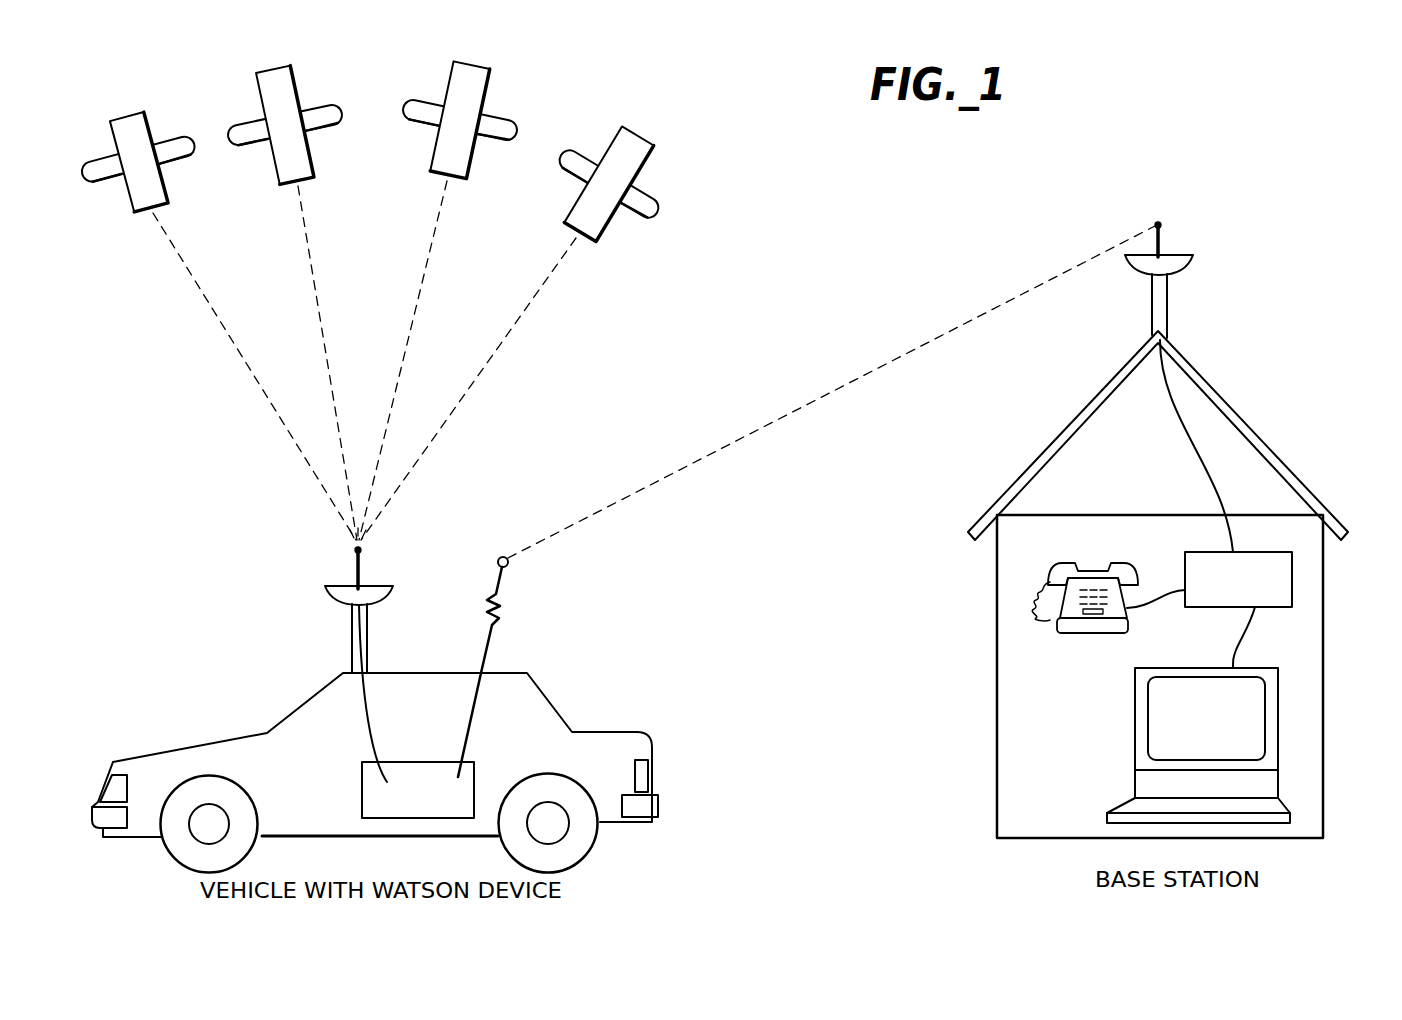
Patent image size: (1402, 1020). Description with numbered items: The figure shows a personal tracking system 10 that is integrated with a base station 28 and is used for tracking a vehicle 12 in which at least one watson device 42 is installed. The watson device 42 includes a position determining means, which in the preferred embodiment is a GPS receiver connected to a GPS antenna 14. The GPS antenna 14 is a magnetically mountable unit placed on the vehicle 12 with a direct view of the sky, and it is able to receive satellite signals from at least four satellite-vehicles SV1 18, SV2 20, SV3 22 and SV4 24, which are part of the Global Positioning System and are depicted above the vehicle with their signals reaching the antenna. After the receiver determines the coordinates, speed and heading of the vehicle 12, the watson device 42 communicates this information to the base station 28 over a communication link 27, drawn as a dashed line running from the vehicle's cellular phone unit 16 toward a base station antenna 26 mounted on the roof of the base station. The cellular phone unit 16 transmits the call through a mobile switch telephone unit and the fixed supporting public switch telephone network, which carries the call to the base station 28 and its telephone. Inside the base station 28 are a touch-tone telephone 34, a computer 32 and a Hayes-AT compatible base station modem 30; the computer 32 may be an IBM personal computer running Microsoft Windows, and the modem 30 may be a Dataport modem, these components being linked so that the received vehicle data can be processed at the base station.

The personal tracking system 10 is at (225, 645).
The vehicle 12 is at (585, 741).
The GPS antenna 14 is at (352, 650).
The cellular phone unit 16 is at (489, 650).
The satellite-vehicle SV1 18 is at (127, 113).
The satellite-vehicle SV2 20 is at (297, 82).
The satellite-vehicle SV3 22 is at (492, 84).
The satellite-vehicle SV4 24 is at (653, 158).
The base station antenna 26 is at (1184, 270).
The communication link 27 is at (885, 364).
The base station 28 is at (1030, 717).
The base station modem 30 is at (1292, 582).
The computer 32 is at (1280, 744).
The touch-tone telephone 34 is at (1078, 635).
The watson device 42 is at (357, 783).